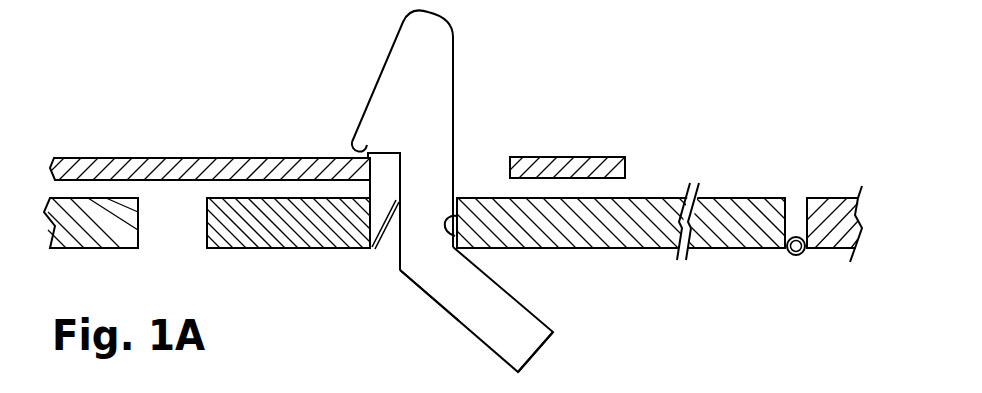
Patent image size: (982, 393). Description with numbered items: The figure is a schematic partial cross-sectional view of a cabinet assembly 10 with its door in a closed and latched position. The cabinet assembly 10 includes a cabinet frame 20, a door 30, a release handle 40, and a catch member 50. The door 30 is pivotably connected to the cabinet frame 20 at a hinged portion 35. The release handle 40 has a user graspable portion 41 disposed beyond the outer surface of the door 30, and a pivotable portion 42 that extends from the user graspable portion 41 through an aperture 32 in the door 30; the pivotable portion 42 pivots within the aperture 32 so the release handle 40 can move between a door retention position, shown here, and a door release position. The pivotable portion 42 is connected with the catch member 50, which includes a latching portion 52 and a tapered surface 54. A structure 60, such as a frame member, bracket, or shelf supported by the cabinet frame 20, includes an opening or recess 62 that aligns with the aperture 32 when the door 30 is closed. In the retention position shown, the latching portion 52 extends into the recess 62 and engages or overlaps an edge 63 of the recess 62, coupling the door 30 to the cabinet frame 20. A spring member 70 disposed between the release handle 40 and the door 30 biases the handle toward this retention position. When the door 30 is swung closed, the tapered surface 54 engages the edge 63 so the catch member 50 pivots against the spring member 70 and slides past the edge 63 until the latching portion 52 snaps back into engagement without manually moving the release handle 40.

The cabinet assembly 10 is at (118, 112).
The cabinet frame 20 is at (110, 222).
The door 30 is at (640, 228).
The aperture 32 is at (455, 238).
The hinged portion 35 is at (790, 258).
The release handle 40 is at (472, 287).
The user graspable portion 41 is at (538, 332).
The pivotable portion 42 is at (422, 240).
The catch member 50 is at (428, 63).
The latching portion 52 is at (362, 142).
The tapered surface 54 is at (383, 65).
The structure 60 is at (247, 172).
The opening or recess 62 is at (482, 170).
The edge 63 is at (372, 160).
The spring member 70 is at (393, 243).